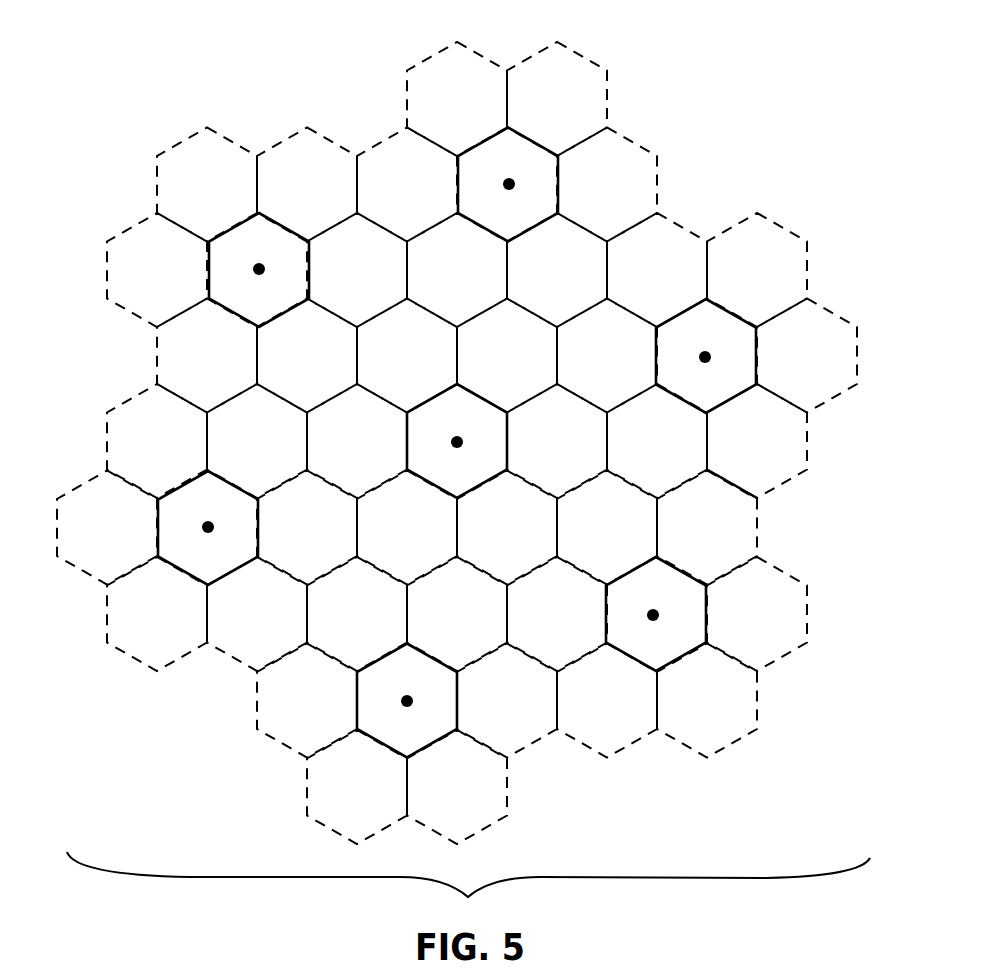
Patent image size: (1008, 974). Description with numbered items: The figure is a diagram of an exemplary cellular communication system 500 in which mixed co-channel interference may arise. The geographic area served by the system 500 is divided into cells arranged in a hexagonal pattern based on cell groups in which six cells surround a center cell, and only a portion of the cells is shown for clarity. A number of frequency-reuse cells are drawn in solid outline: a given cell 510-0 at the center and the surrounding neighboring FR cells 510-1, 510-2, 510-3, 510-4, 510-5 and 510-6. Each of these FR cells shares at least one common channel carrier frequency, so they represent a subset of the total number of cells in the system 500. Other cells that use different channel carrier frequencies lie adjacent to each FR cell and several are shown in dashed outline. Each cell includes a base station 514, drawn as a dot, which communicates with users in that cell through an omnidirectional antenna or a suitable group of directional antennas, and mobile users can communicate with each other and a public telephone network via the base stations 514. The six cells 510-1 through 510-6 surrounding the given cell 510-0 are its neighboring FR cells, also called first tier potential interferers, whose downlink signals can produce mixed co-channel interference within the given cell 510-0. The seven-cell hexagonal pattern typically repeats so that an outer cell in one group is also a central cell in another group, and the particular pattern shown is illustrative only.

The cellular communication system 500 is at (769, 126).
The given cell 510-0 is at (433, 397).
The neighboring FR cell 510-1 is at (487, 141).
The neighboring FR cell 510-2 is at (688, 310).
The neighboring FR cell 510-3 is at (627, 570).
The neighboring FR cell 510-4 is at (382, 655).
The neighboring FR cell 510-5 is at (182, 483).
The neighboring FR cell 510-6 is at (240, 226).
The base station 514 is at (259, 268).